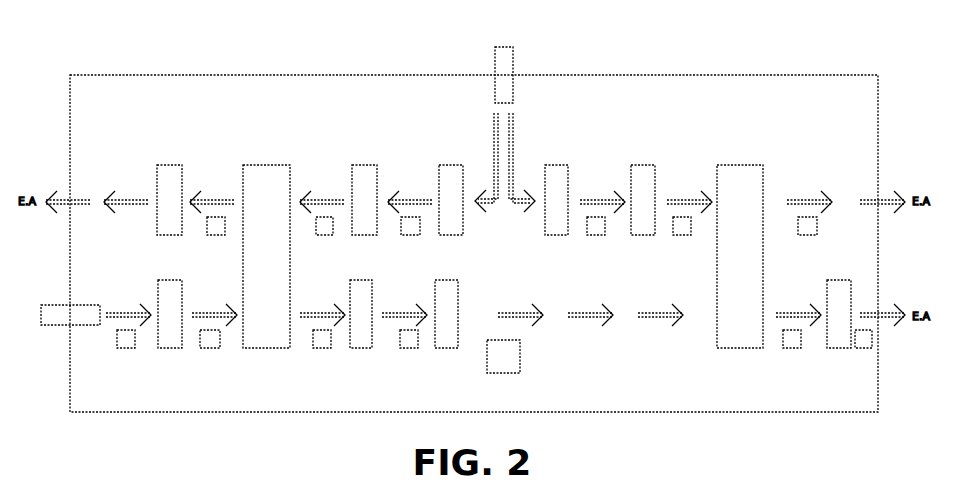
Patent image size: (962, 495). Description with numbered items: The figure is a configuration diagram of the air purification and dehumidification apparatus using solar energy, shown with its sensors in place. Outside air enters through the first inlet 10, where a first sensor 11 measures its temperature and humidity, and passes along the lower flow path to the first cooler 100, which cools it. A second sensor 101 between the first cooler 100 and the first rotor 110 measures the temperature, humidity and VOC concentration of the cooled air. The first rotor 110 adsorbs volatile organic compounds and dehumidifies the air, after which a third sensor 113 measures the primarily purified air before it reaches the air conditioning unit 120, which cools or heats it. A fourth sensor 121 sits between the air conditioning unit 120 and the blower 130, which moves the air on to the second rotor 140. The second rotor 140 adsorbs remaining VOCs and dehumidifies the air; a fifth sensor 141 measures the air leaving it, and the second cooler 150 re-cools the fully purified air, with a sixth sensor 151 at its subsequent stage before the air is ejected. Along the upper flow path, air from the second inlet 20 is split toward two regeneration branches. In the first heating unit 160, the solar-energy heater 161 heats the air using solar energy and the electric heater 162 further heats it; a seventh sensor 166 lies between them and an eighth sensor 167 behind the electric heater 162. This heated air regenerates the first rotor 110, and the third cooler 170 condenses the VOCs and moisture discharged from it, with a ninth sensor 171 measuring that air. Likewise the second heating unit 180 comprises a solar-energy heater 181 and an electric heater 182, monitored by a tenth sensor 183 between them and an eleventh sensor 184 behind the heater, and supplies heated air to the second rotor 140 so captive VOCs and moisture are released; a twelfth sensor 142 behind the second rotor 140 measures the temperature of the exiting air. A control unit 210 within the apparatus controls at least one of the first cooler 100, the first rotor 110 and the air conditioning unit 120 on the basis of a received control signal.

The first inlet 10 is at (95, 305).
The first sensor 11 is at (132, 348).
The second inlet 20 is at (505, 46).
The first cooler 100 is at (172, 280).
The second sensor 101 is at (216, 348).
The first rotor 110 is at (270, 165).
The third sensor 113 is at (328, 348).
The air conditioning unit 120 is at (364, 280).
The fourth sensor 121 is at (413, 348).
The blower 130 is at (450, 280).
The second rotor 140 is at (742, 165).
The fifth sensor 141 is at (797, 348).
The twelfth sensor 142 is at (814, 235).
The second cooler 150 is at (840, 280).
The sixth sensor 151 is at (860, 348).
The first heating unit 160 is at (385, 135).
The solar-energy heater 161 is at (455, 165).
The electric heater 162 is at (368, 165).
The seventh sensor 166 is at (417, 235).
The eighth sensor 167 is at (330, 235).
The third cooler 170 is at (174, 165).
The ninth sensor 171 is at (222, 235).
The second heating unit 180 is at (648, 135).
The solar-energy heater 181 is at (560, 165).
The electric heater 182 is at (647, 165).
The tenth sensor 183 is at (602, 235).
The eleventh sensor 184 is at (688, 235).
The control unit 210 is at (521, 355).